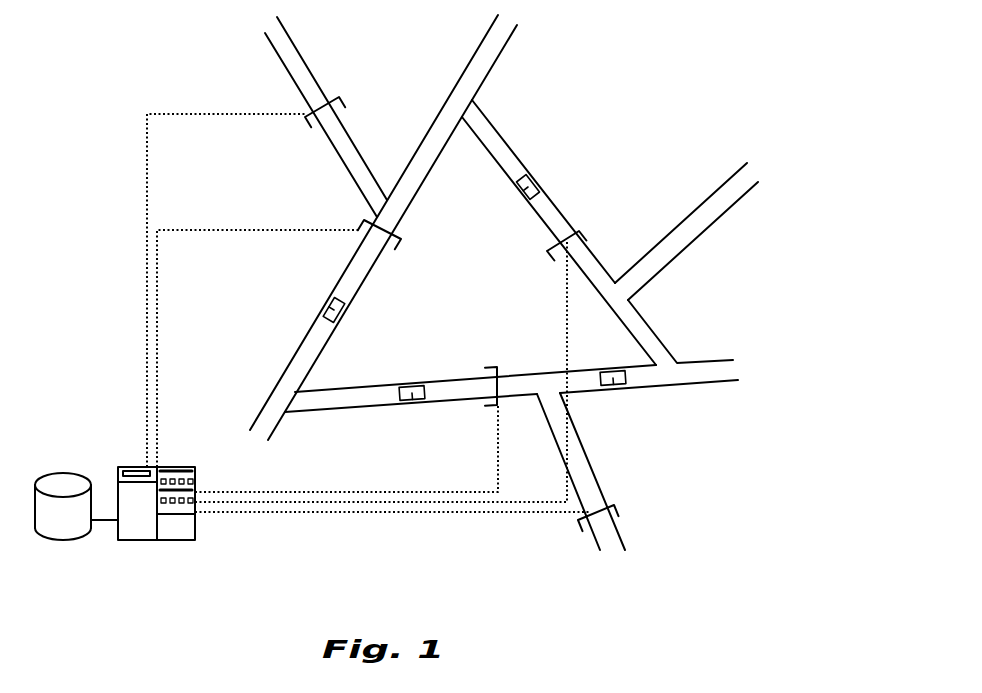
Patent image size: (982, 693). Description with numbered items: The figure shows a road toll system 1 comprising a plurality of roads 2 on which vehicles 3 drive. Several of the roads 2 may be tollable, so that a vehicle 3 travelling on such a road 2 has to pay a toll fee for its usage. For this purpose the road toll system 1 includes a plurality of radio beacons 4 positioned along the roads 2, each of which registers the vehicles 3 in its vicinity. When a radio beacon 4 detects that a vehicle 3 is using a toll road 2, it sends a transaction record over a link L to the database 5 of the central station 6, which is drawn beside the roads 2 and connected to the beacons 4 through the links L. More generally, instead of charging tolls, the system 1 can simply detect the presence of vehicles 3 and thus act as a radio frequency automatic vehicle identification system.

The road toll system 1 is at (616, 84).
The road 2 is at (340, 136).
The vehicle 3 is at (535, 190).
The radio beacon 4 is at (340, 108).
The database 5 is at (60, 542).
The central station 6 is at (157, 543).
The link L is at (148, 208).